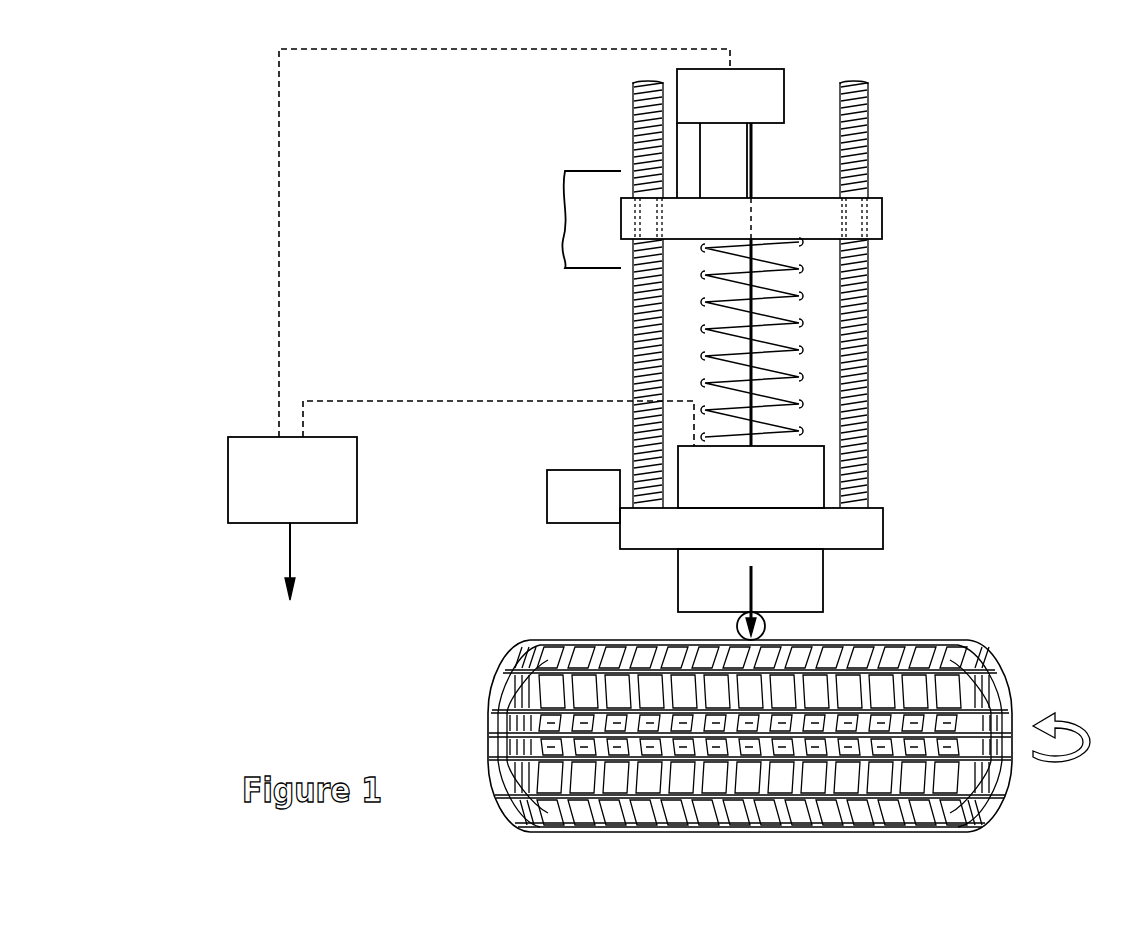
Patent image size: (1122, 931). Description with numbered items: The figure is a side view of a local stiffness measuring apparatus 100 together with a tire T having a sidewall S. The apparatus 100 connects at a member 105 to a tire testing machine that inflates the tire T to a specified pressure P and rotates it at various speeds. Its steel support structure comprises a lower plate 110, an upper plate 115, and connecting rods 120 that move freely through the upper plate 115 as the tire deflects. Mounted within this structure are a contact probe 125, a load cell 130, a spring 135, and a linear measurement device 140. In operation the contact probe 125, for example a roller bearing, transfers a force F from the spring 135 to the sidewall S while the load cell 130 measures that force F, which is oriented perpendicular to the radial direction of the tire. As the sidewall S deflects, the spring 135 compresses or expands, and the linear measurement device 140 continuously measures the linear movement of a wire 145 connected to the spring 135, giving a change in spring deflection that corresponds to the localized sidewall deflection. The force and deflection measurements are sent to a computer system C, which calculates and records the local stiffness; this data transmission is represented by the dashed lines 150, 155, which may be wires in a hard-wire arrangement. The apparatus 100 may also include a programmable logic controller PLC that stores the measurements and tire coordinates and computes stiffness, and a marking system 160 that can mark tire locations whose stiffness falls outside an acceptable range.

The local stiffness measuring apparatus 100 is at (578, 338).
The member 105 is at (580, 242).
The lower plate 110 is at (856, 530).
The upper plate 115 is at (873, 222).
The connecting rods 120 is at (853, 292).
The contact probe 125 is at (767, 627).
The load cell 130 is at (786, 472).
The spring 135 is at (797, 388).
The linear measurement device 140 is at (778, 96).
The wire 145 is at (757, 157).
The dashed line 150 is at (512, 50).
The dashed line 155 is at (497, 401).
The marking apparatus and system 160 is at (732, 541).
The programmable logic controller PLC is at (583, 496).
The computer system C is at (357, 492).
The force F is at (751, 578).
The sidewall S is at (580, 638).
The tire T is at (1030, 668).
The pressure P is at (512, 815).